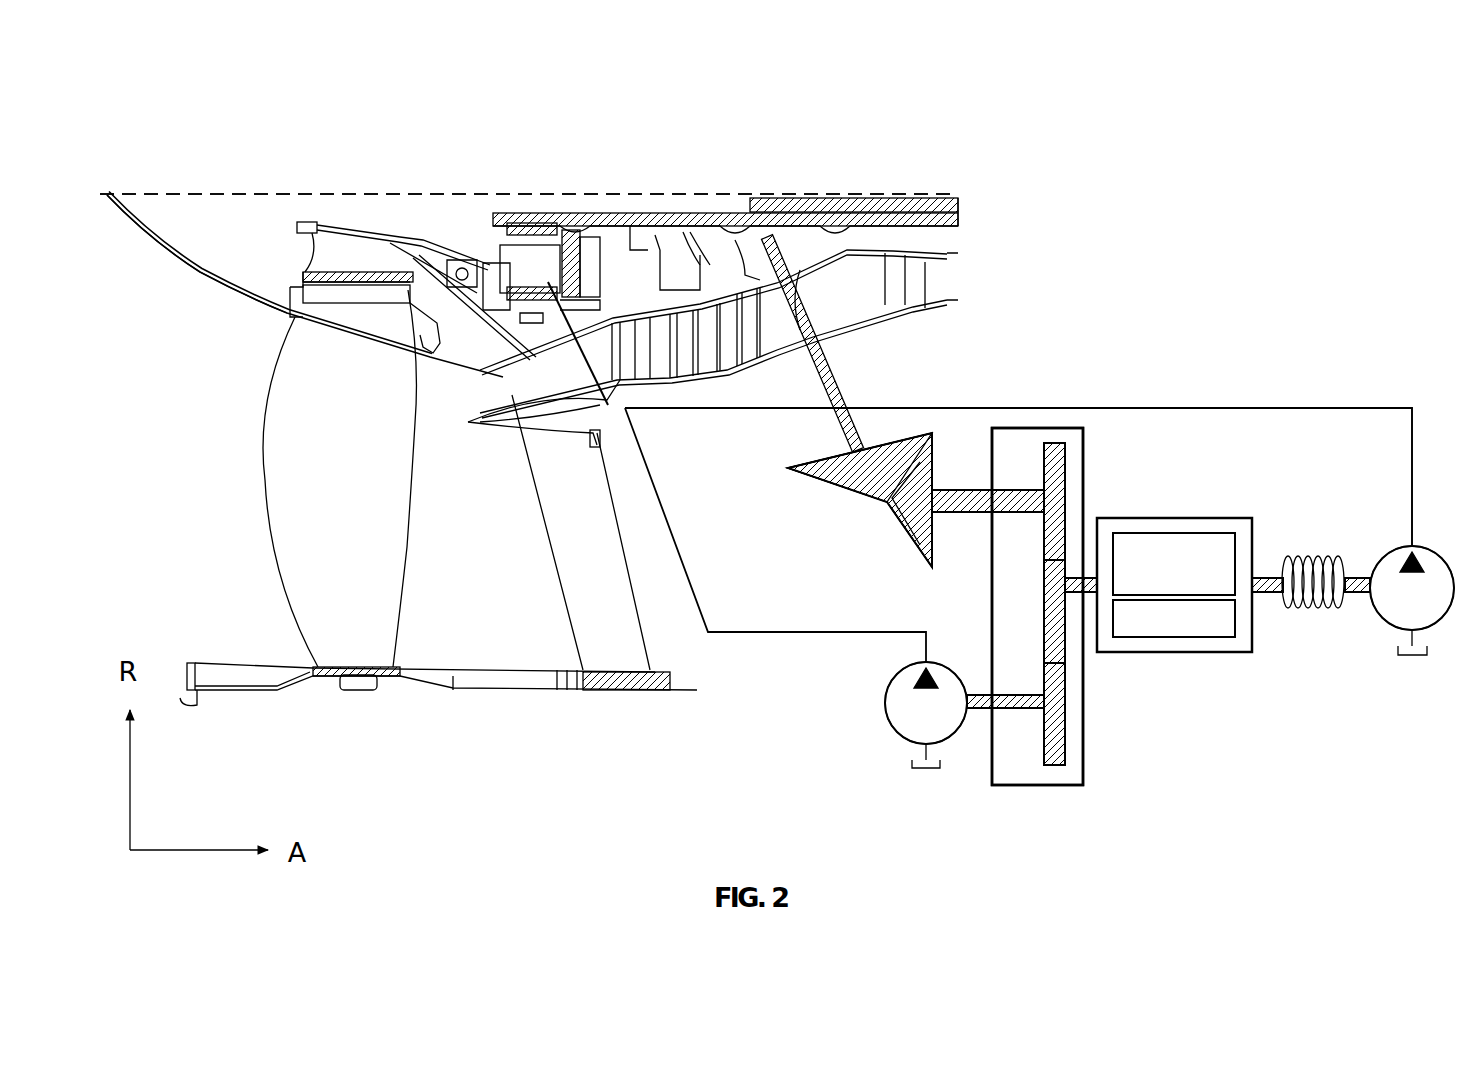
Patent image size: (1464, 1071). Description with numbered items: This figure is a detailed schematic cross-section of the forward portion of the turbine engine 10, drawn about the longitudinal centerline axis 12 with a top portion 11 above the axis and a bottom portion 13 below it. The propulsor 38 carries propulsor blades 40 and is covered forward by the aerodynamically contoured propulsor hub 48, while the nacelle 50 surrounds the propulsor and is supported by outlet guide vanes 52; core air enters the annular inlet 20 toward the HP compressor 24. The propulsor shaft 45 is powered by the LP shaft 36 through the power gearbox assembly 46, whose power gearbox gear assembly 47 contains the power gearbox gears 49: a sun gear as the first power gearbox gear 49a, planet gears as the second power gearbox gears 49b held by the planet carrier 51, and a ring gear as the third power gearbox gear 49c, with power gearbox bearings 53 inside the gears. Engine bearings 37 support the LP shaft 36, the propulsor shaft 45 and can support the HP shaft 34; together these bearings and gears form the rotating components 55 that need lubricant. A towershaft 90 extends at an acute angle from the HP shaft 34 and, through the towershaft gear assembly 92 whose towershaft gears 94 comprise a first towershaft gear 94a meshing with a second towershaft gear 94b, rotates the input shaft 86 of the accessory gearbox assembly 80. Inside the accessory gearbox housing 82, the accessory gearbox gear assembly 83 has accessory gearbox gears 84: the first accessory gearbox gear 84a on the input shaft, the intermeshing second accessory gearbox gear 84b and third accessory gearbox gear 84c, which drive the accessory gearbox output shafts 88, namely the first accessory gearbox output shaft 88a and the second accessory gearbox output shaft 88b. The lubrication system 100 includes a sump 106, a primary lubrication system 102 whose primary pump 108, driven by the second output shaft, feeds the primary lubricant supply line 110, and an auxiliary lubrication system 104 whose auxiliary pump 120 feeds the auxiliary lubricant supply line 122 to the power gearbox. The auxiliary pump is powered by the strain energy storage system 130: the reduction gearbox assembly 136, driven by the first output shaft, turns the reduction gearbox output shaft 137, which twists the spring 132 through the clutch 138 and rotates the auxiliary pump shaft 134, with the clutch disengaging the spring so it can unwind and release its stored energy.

The turbine engine 10 is at (185, 118).
The top portion 11 is at (170, 172).
The longitudinal centerline axis 12 is at (908, 200).
The bottom portion 13 is at (147, 242).
The annular inlet 20 is at (452, 397).
The high pressure compressor 24 is at (987, 290).
The HP shaft 34 is at (862, 218).
The LP shaft 36 is at (635, 220).
The engine bearings 37 is at (690, 240).
The propulsor 38 is at (262, 530).
The propulsor blades 40 is at (275, 520).
The propulsor shaft 45 is at (370, 225).
The power gearbox assembly 46 is at (492, 205).
The power gearbox gear assembly 47 is at (552, 325).
The propulsor hub 48 is at (190, 268).
The power gearbox gears 49 is at (492, 258).
The first power gearbox gear 49a is at (515, 222).
The second power gearbox gears 49b is at (520, 222).
The third power gearbox gear 49c is at (463, 378).
The nacelle 50 is at (223, 694).
The planet carrier 51 is at (597, 245).
The outlet guide vanes 52 is at (625, 562).
The power gearbox bearings 53 is at (574, 230).
The rotating components 55 is at (470, 215).
The accessory gearbox assembly 80 is at (1056, 423).
The accessory gearbox housing 82 is at (1040, 786).
The accessory gearbox gear assembly 83 is at (1038, 450).
The accessory gearbox gears 84 is at (1078, 458).
The first accessory gearbox gear 84a is at (1066, 503).
The second accessory gearbox gear 84b is at (1070, 660).
The third accessory gearbox gear 84c is at (1070, 720).
The input shaft 86 is at (948, 520).
The accessory gearbox output shafts 88 is at (1070, 565).
The first accessory gearbox output shaft 88a is at (1075, 600).
The second accessory gearbox output shaft 88b is at (1003, 692).
The towershaft 90 is at (833, 356).
The towershaft gear assembly 92 is at (830, 520).
The towershaft gears 94 is at (810, 454).
The first towershaft gear 94a is at (818, 478).
The second towershaft gear 94b is at (915, 540).
The lubrication system 100 is at (1210, 300).
The primary lubrication system 102 is at (843, 717).
The auxiliary lubrication system 104 is at (1362, 385).
The sump 106 is at (1400, 655).
The primary pump 108 is at (884, 700).
The primary lubricant supply line 110 is at (738, 630).
The auxiliary pump 120 is at (1372, 612).
The auxiliary lubricant supply line 122 is at (1340, 407).
The strain energy storage system 130 is at (1273, 430).
The spring 132 is at (1312, 558).
The auxiliary pump shaft 134 is at (1358, 574).
The reduction gearbox assembly 136 is at (1183, 530).
The reduction gearbox output shaft 137 is at (1260, 578).
The clutch 138 is at (1215, 652).